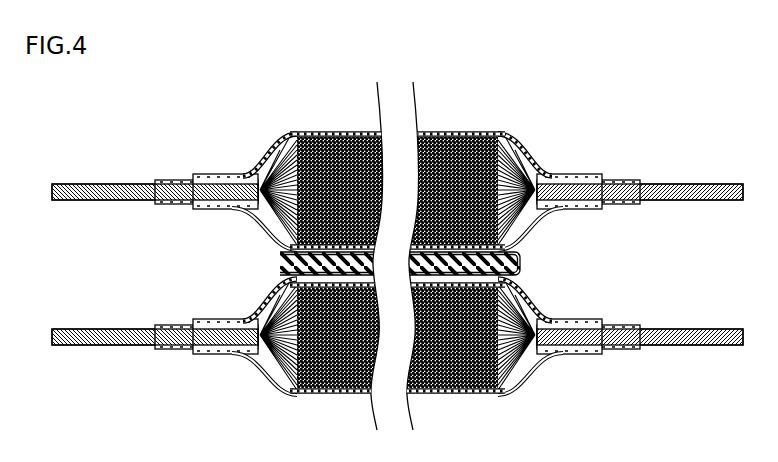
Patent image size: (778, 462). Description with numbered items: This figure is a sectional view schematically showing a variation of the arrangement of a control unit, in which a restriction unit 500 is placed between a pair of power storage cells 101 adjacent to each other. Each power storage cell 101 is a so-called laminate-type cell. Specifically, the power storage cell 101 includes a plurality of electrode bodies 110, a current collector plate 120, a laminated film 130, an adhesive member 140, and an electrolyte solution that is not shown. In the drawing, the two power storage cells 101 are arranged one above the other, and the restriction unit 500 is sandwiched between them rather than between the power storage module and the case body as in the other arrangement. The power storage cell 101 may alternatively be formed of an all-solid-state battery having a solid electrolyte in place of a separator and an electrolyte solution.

The power storage cell 101 is at (452, 79).
The electrode bodies 110 is at (467, 148).
The current collector plate 120 is at (563, 190).
The laminated film 130 is at (514, 134).
The adhesive member 140 is at (607, 178).
The restriction unit 500 is at (266, 259).